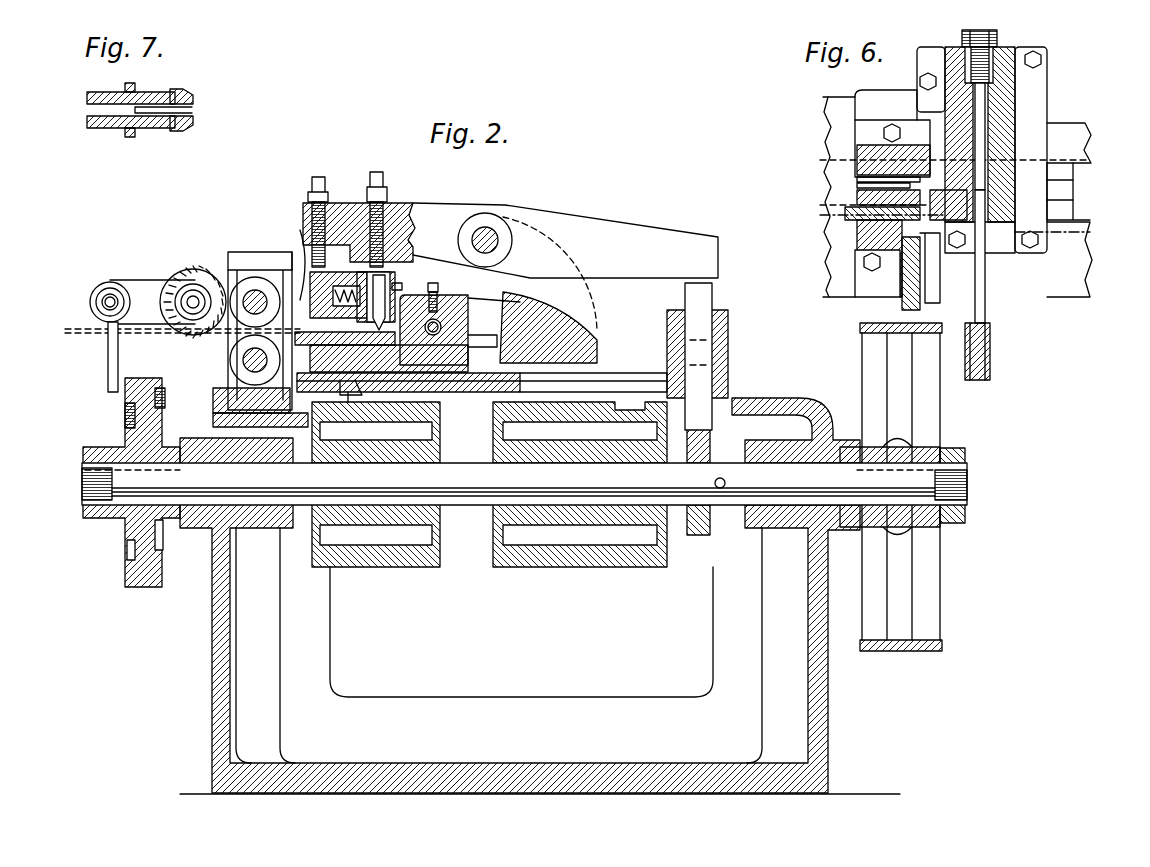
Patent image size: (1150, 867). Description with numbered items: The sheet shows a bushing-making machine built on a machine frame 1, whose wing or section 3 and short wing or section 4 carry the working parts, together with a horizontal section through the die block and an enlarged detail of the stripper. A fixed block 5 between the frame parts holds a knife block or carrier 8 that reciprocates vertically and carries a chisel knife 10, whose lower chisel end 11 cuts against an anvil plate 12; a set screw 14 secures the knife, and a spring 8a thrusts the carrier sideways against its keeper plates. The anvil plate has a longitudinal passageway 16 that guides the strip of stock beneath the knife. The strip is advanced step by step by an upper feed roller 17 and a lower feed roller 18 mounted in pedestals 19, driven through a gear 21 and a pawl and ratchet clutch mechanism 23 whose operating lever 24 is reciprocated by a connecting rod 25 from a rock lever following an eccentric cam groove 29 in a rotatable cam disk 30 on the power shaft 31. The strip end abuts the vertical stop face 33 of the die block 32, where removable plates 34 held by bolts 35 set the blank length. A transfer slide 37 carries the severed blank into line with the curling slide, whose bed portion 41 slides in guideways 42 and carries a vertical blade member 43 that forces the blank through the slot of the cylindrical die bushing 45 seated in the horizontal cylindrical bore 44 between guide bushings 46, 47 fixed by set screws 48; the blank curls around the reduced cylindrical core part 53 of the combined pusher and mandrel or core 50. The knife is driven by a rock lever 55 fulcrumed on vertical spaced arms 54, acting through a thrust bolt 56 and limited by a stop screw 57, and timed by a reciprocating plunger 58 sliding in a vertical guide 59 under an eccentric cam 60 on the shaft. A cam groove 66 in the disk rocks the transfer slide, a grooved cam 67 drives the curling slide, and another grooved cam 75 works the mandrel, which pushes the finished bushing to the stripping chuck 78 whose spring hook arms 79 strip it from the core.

In FIG. 2, the machine frame 1 is at (515, 672).
In FIG. 2, the wing or section of frame 3 is at (758, 398).
In FIG. 2, the short wing or section of frame 4 is at (210, 640).
In FIG. 6, the fixed block 5 is at (856, 156).
In FIG. 2, the fixed block 5 is at (312, 300).
In FIG. 2, the knife block or carrier 8 is at (366, 280).
In FIG. 2, the spring 8a is at (345, 286).
In FIG. 2, the chisel knife 10 is at (398, 258).
In FIG. 2, the lower chisel end of knife 11 is at (392, 360).
In FIG. 6, the anvil plate 12 is at (845, 214).
In FIG. 2, the anvil plate 12 is at (250, 322).
In FIG. 2, the set screw 14 is at (397, 290).
In FIG. 6, the longitudinal passageway 16 is at (856, 196).
In FIG. 2, the longitudinal passageway 16 is at (300, 300).
In FIG. 2, the upper feed roller 17 is at (245, 278).
In FIG. 2, the lower feed roller 18 is at (240, 372).
In FIG. 2, the pedestals 19 is at (250, 252).
In FIG. 2, the gear 21 is at (178, 280).
In FIG. 2, the pawl and ratchet clutch mechanism 23 is at (125, 286).
In FIG. 2, the operating lever 24 is at (90, 302).
In FIG. 2, the connecting rod 25 is at (105, 383).
In FIG. 2, the eccentric cam groove 29 is at (125, 555).
In FIG. 2, the rotatable cam disk 30 is at (130, 585).
In FIG. 2, the power shaft 31 is at (478, 498).
In FIG. 6, the die block 32 is at (1010, 118).
In FIG. 6, the vertical stop face 33 is at (921, 262).
In FIG. 2, the vertical stop face 33 is at (442, 408).
In FIG. 6, the removable plates 34 is at (986, 255).
In FIG. 2, the removable plates 34 is at (445, 325).
In FIG. 2, the bolts 35 is at (440, 292).
In FIG. 6, the transfer slide 37 is at (936, 292).
In FIG. 2, the bed portion of curling slide 41 is at (525, 386).
In FIG. 2, the guideways 42 is at (655, 373).
In FIG. 6, the vertical blade member 43 is at (856, 180).
In FIG. 6, the horizontal cylindrical bore 44 is at (1060, 140).
In FIG. 6, the cylindrical die bushing 45 is at (1075, 192).
In FIG. 6, the guide bushing 46 is at (1020, 178).
In FIG. 6, the guide bushing or sleeve 47 is at (1075, 212).
In FIG. 2, the set screws 48 is at (470, 305).
In FIG. 6, the combined pusher and mandrel or core 50 is at (991, 350).
In FIG. 6, the reduced cylindrical core part 53 is at (940, 155).
In FIG. 2, the vertical spaced arms of standard 54 is at (590, 310).
In FIG. 2, the rock lever 55 is at (600, 225).
In FIG. 2, the thrust bolt 56 is at (385, 176).
In FIG. 2, the stop screw 57 is at (318, 176).
In FIG. 2, the reciprocating plunger 58 is at (705, 298).
In FIG. 2, the vertical guide 59 is at (730, 332).
In FIG. 2, the eccentric cam 60 is at (695, 538).
In FIG. 2, the cam groove 66 is at (160, 545).
In FIG. 2, the grooved cam 67 is at (405, 568).
In FIG. 2, the grooved cam 75 is at (570, 568).
In FIG. 7, the stripping chuck 78 is at (120, 128).
In FIG. 6, the stripping chuck 78 is at (993, 45).
In FIG. 7, the spring hook arms 79 is at (187, 92).
In FIG. 6, the spring hook arms 79 is at (990, 92).